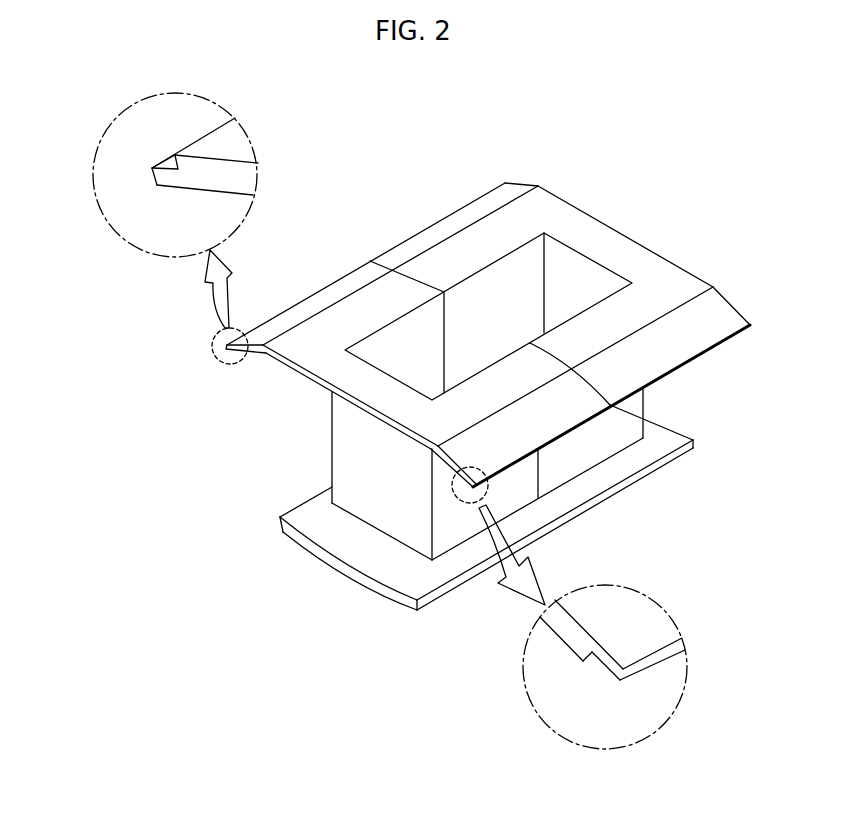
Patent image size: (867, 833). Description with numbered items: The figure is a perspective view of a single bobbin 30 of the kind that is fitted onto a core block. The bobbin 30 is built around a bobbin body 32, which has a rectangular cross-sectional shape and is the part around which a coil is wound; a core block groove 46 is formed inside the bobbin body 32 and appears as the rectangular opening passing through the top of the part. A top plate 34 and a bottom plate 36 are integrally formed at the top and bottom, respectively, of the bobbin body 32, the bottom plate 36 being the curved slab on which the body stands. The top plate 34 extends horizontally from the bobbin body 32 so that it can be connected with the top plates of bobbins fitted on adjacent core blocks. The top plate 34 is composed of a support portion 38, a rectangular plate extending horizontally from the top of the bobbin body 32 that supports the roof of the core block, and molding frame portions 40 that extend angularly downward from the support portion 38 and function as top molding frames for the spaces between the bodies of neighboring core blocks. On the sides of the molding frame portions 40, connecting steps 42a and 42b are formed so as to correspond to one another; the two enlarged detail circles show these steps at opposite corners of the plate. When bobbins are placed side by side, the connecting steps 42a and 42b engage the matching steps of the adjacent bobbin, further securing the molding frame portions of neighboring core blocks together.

The bobbin 30 is at (483, 113).
The bobbin body 32 is at (638, 410).
The top plate 34 is at (501, 335).
The bottom plate 36 is at (695, 441).
The support portion 38 is at (693, 278).
The molding frame portion 40 is at (725, 308).
The connecting step 42a is at (152, 177).
The connecting step 42b is at (608, 677).
The core block groove 46 is at (574, 274).